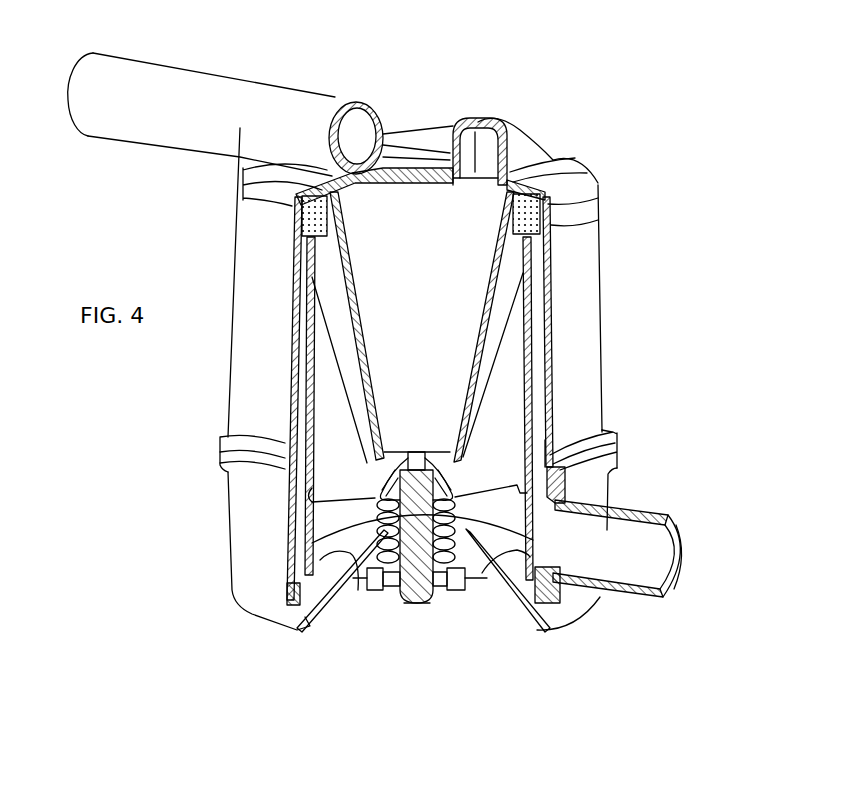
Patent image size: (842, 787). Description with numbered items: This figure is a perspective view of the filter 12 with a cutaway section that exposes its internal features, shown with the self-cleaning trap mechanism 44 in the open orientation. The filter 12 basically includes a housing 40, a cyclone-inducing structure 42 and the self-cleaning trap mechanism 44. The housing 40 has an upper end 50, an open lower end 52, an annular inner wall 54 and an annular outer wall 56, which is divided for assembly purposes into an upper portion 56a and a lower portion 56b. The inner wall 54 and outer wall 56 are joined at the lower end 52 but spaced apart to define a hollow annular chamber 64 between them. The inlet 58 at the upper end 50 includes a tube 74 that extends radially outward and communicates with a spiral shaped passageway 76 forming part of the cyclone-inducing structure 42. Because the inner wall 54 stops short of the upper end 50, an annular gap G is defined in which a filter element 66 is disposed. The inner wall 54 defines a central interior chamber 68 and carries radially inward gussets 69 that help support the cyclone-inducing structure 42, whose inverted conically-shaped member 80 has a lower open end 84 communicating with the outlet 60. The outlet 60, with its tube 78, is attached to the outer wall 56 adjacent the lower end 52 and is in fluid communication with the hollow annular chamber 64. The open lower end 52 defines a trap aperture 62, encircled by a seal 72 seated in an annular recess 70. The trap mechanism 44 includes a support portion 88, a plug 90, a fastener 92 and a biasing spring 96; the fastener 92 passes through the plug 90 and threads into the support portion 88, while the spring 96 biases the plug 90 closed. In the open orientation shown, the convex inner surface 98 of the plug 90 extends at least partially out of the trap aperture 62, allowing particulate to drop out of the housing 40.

The filter 12 is at (548, 93).
The housing 40 is at (625, 368).
The cyclone-inducing structure 42 is at (505, 417).
The self-cleaning trap mechanism 44 is at (379, 624).
The upper end 50 is at (562, 165).
The lower end 52 is at (252, 590).
The annular inner wall 54 is at (317, 472).
The annular outer wall 56 is at (160, 418).
The upper portion 56a is at (258, 404).
The lower portion 56b is at (248, 510).
The inlet 58 is at (137, 82).
The outlet 60 is at (658, 550).
The trap aperture 62 is at (515, 600).
The hollow annular chamber 64 is at (540, 332).
The filter element 66 is at (312, 217).
The central interior chamber 68 is at (330, 390).
The gussets 69 is at (358, 495).
The annular recess 70 is at (287, 593).
The seal 72 is at (310, 630).
The tube 74 is at (168, 117).
The spiral shaped passageway 76 is at (467, 148).
The tube 78 is at (682, 575).
The inverted conically-shaped member 80 is at (487, 363).
The lower open end 84 is at (398, 452).
The support portion 88 is at (438, 452).
The plug 90 is at (553, 534).
The fastener 92 is at (423, 603).
The biasing spring 96 is at (473, 584).
The convex inner surface 98 is at (375, 590).
The annular gap G is at (548, 220).